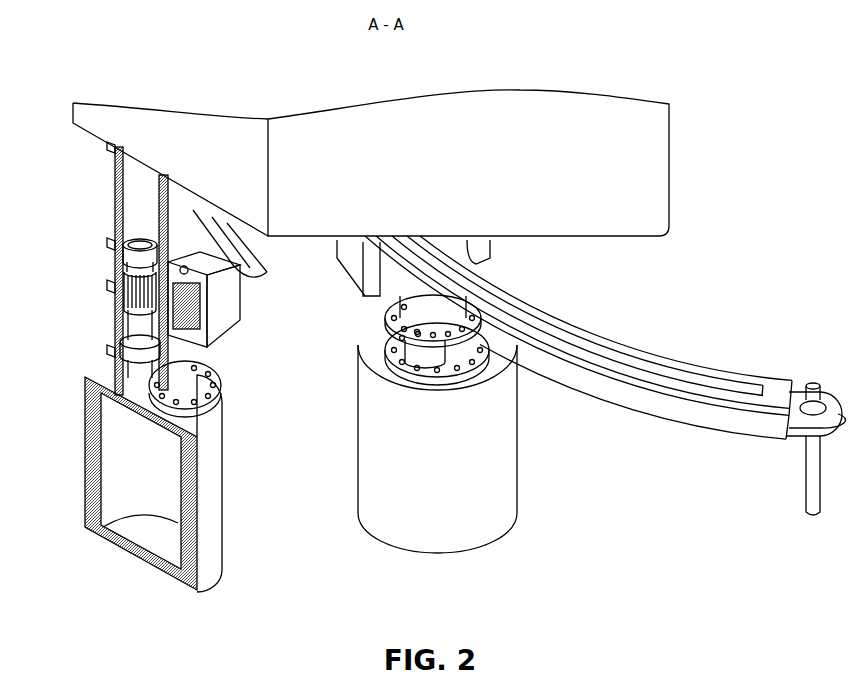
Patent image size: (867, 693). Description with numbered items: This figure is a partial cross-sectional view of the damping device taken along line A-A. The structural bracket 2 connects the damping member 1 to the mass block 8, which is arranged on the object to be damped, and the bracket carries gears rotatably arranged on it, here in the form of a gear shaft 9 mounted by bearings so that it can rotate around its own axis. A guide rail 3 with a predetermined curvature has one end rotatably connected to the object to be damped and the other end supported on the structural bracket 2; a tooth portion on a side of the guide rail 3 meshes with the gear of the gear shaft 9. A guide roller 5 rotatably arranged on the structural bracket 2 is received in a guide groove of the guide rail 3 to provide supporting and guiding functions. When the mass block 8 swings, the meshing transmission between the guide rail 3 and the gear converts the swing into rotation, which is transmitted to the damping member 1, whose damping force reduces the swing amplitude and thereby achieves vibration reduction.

The damping member 1 is at (212, 477).
The structural bracket 2 is at (133, 203).
The guide rail 3 is at (610, 345).
The guide roller 5 is at (207, 330).
The mass block 8 is at (650, 172).
The gear shaft 9 is at (128, 330).